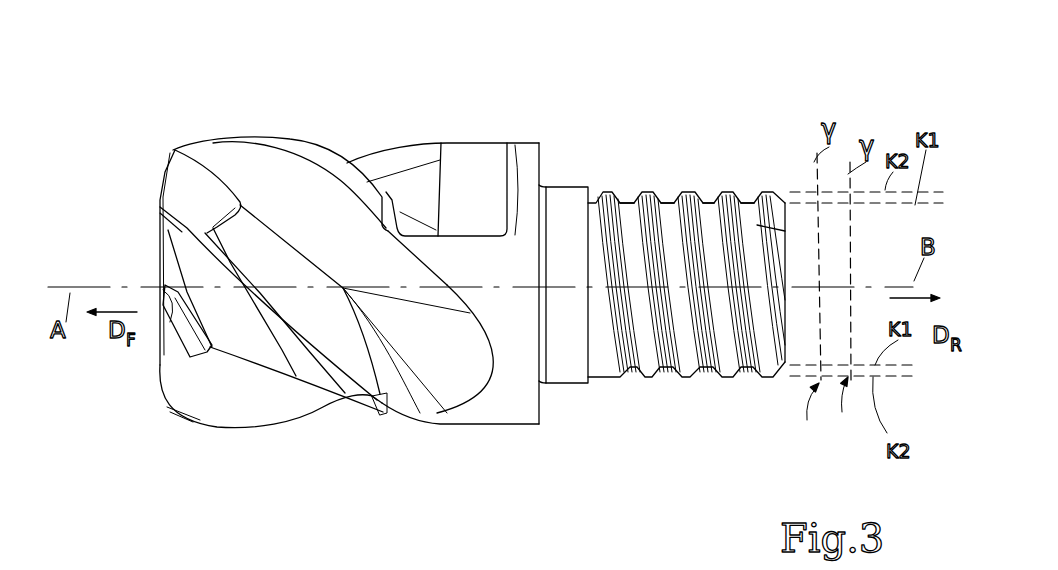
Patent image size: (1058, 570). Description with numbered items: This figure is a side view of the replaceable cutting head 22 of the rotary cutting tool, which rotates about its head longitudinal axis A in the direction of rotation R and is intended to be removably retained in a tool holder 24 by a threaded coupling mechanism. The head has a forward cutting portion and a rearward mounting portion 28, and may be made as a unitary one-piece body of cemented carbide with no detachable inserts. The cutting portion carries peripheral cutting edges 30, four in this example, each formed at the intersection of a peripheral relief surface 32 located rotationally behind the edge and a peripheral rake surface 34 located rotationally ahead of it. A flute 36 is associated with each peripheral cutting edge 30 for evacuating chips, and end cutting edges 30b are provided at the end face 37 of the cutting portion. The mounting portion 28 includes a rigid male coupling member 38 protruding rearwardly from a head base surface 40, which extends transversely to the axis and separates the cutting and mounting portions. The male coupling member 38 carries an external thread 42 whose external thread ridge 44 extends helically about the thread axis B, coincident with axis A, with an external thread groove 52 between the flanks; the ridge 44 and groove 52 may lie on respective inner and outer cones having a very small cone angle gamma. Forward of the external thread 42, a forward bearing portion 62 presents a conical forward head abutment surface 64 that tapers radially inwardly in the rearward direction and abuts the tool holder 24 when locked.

The replaceable cutting head 22 is at (150, 103).
The tool holder 24 is at (353, 99).
The mounting portion 28 is at (845, 66).
The peripheral cutting edge 30 is at (286, 142).
The end cutting edge 30b is at (160, 223).
The peripheral relief surface 32 is at (222, 258).
The peripheral rake surface 34 is at (260, 260).
The flute 36 is at (262, 176).
The end face 37 is at (118, 364).
The male coupling member 38 is at (661, 426).
The head base surface 40 is at (545, 150).
The external thread 42 is at (757, 408).
The external thread ridge 44 is at (644, 176).
The external thread groove 52 is at (664, 186).
The forward bearing portion 62 is at (562, 421).
The forward head abutment surface 64 is at (562, 186).